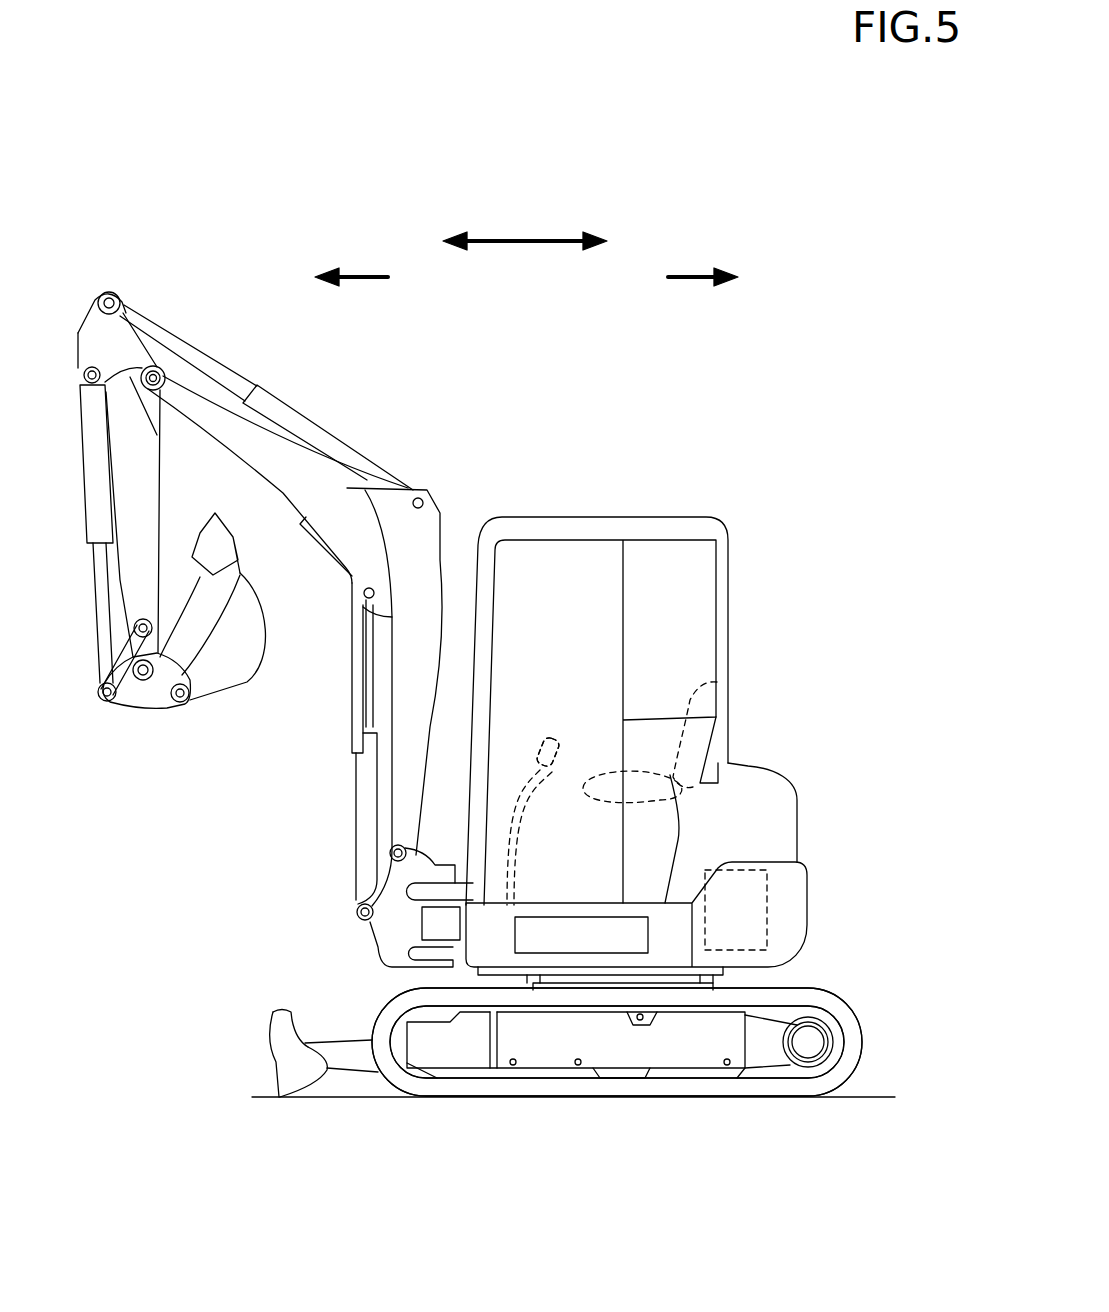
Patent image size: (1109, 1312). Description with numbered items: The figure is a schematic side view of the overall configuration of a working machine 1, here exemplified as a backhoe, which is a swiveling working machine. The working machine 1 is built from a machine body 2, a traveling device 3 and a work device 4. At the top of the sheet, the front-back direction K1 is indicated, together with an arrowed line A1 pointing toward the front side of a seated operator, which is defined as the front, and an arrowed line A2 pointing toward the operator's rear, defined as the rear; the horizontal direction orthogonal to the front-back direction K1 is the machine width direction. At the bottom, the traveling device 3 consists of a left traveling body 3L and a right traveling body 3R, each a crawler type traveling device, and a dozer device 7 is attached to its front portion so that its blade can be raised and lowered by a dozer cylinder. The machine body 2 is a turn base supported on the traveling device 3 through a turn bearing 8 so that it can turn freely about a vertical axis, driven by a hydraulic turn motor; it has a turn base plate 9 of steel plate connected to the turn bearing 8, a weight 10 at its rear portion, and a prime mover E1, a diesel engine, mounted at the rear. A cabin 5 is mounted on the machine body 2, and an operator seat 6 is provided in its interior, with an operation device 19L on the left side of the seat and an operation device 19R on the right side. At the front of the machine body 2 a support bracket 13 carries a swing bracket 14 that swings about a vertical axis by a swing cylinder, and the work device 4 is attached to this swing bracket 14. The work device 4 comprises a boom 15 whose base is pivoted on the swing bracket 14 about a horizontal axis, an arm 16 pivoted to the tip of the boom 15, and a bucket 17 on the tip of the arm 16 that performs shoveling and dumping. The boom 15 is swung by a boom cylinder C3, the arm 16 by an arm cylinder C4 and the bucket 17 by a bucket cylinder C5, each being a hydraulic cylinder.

The working machine 1 is at (807, 570).
The machine body 2 is at (480, 998).
The traveling device 3 is at (903, 960).
The traveling body 3L is at (617, 1042).
The traveling body 3R is at (617, 1042).
The work device 4 is at (437, 468).
The cabin 5 is at (732, 545).
The operator seat 6 is at (692, 703).
The dozer device 7 is at (333, 1028).
The turn bearing 8 is at (690, 977).
The turn base plate 9 is at (527, 975).
The weight 10 is at (790, 883).
The support bracket 13 is at (437, 892).
The swing bracket 14 is at (375, 938).
The boom 15 is at (373, 527).
The arm 16 is at (142, 490).
The bucket 17 is at (247, 652).
The operation device 19L is at (550, 730).
The operation device 19R is at (555, 701).
The boom cylinder C3 is at (363, 797).
The arm cylinder C4 is at (290, 408).
The bucket cylinder C5 is at (97, 525).
The prime mover E1 is at (767, 917).
The front-back direction K1 is at (527, 240).
The arrowed line A1 is at (362, 276).
The arrowed line A2 is at (693, 276).